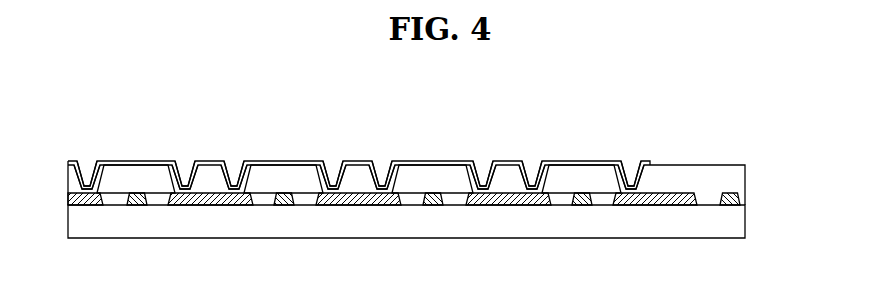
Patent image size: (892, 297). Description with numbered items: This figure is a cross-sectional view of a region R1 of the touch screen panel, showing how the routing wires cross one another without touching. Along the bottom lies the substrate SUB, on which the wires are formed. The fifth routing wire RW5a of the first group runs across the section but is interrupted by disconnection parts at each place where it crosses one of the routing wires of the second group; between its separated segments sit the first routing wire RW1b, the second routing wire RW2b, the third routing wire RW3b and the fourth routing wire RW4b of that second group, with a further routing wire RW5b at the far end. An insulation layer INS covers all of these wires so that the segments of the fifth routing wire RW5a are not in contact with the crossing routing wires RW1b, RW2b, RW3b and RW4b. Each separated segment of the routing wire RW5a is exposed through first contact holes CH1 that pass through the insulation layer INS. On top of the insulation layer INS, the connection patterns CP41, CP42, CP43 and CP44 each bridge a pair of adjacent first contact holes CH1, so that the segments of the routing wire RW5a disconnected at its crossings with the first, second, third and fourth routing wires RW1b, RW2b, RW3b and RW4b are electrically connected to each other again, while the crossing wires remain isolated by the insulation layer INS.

The region R1 is at (80, 100).
The insulation layer INS is at (745, 176).
The substrate SUB is at (745, 224).
The first contact hole CH1 is at (88, 167).
The connection pattern CP41 is at (136, 160).
The connection pattern CP42 is at (286, 160).
The connection pattern CP43 is at (434, 160).
The connection pattern CP44 is at (583, 160).
The fifth 2-1 routing wire RW5a is at (87, 206).
The first 2-2 routing wire RW1b is at (140, 206).
The second 2-2 routing wire RW2b is at (288, 206).
The third 2-2 routing wire RW3b is at (435, 206).
The fourth 2-2 routing wire RW4b is at (585, 206).
The routing wire RW5b is at (732, 206).